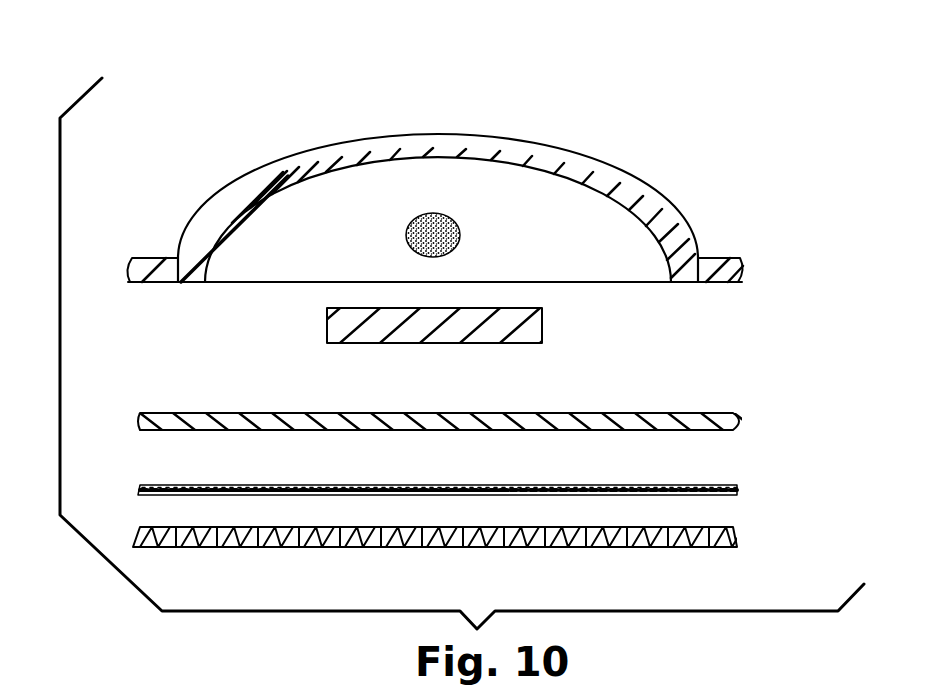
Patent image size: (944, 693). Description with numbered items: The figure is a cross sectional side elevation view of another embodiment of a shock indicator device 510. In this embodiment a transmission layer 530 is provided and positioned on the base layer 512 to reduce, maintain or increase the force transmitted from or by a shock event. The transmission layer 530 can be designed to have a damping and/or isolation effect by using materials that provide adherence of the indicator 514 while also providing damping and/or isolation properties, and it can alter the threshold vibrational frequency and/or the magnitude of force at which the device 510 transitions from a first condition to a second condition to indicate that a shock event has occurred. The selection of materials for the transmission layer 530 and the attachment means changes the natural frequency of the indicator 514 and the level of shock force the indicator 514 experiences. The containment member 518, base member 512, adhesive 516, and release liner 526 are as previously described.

The shock indicator device 510 is at (630, 164).
The containment member 518 is at (458, 151).
The indicator 514 is at (410, 222).
The transmission layer 530 is at (330, 318).
The base layer 512 is at (617, 418).
The adhesive 516 is at (738, 488).
The release liner 526 is at (738, 536).